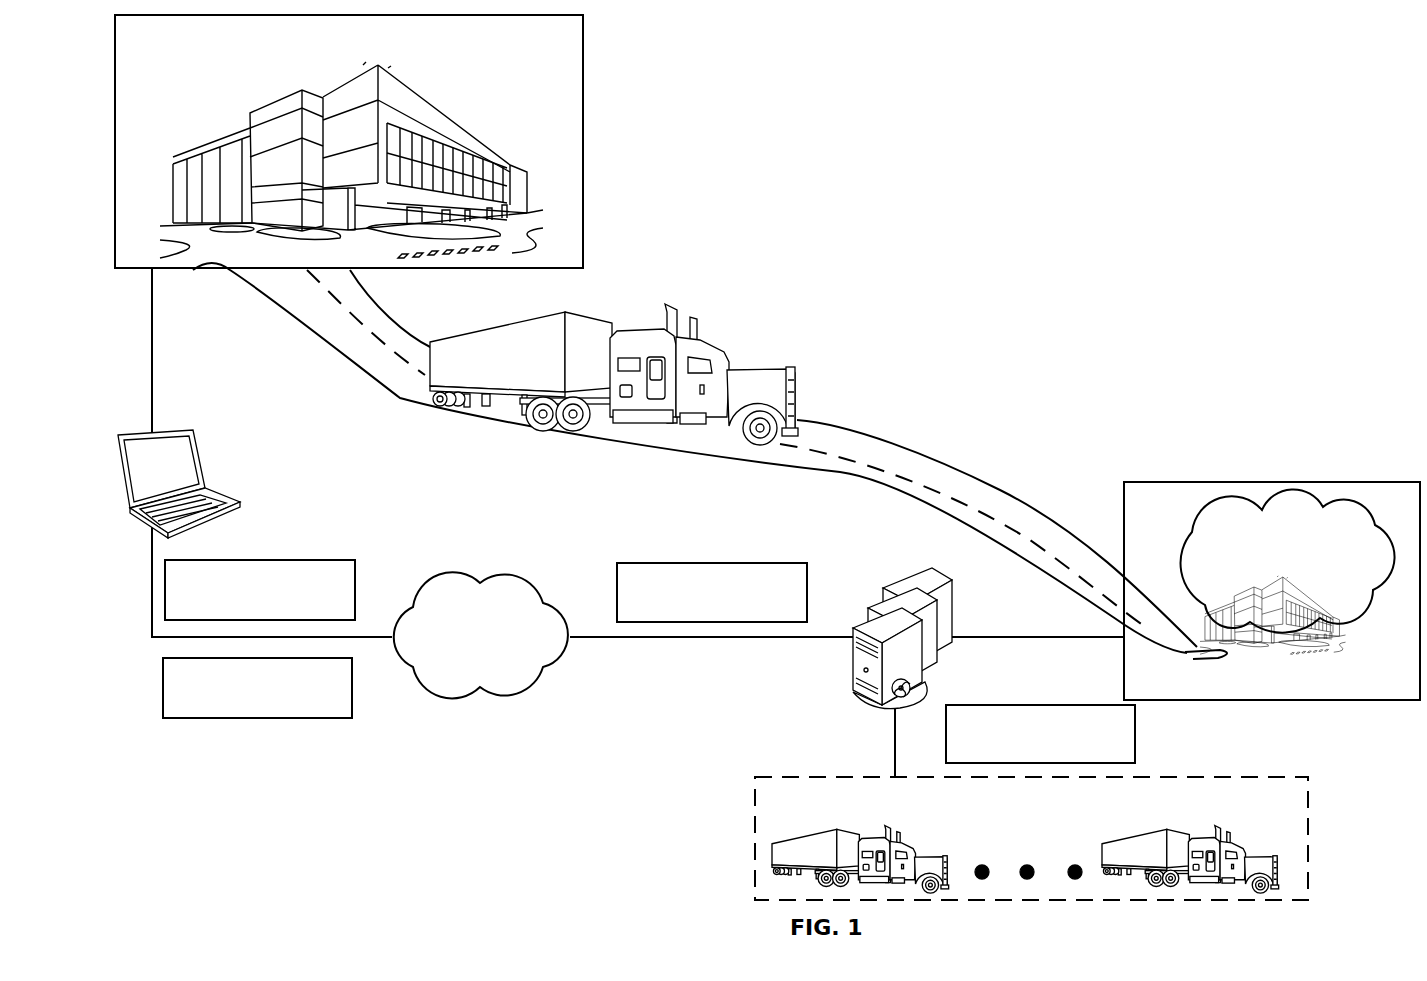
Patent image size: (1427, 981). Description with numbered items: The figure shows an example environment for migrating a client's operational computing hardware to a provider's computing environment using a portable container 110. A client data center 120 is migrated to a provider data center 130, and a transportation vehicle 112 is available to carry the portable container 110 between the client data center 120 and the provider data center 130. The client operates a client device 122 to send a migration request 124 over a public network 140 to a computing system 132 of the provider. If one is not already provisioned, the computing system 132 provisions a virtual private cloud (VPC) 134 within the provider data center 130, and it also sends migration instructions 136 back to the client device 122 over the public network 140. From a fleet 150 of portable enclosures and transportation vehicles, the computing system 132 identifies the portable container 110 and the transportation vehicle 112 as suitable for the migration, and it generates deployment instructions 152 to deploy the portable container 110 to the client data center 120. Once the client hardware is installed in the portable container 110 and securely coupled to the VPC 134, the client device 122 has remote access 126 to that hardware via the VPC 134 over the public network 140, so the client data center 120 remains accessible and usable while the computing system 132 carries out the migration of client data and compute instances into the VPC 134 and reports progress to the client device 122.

The portable container 110 is at (540, 312).
The transportation vehicle 112 is at (767, 367).
The client data center 120 is at (469, 50).
The client device 122 is at (238, 500).
The migration request 124 is at (326, 613).
The remote access 126 is at (276, 712).
The provider data center 130 is at (1272, 591).
The computing system 132 is at (897, 573).
The virtual private cloud (VPC) 134 is at (1333, 562).
The migration instructions 136 is at (793, 617).
The public network 140 is at (546, 646).
The fleet 150 is at (1080, 807).
The deployment instructions 152 is at (1123, 758).